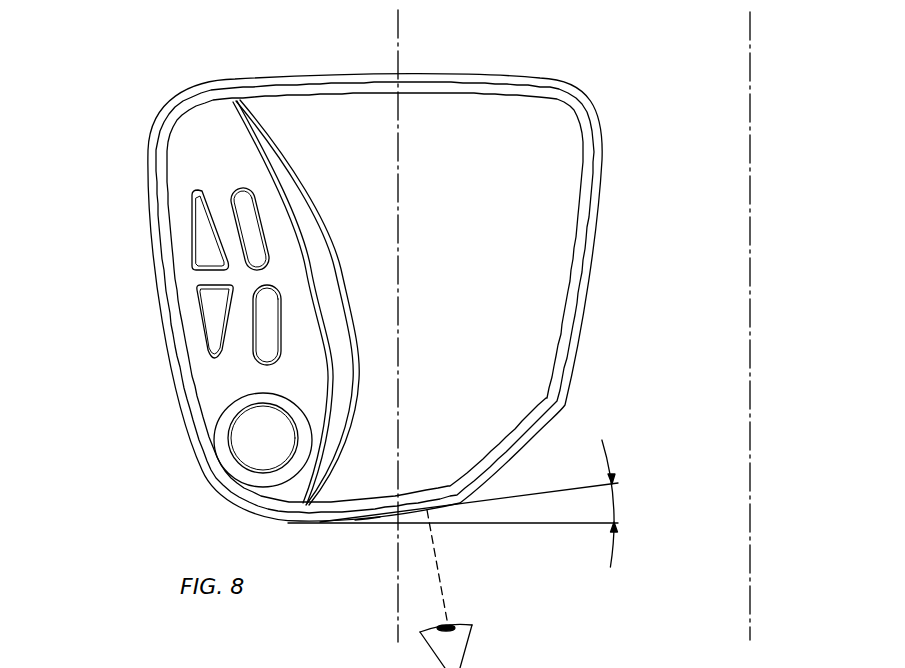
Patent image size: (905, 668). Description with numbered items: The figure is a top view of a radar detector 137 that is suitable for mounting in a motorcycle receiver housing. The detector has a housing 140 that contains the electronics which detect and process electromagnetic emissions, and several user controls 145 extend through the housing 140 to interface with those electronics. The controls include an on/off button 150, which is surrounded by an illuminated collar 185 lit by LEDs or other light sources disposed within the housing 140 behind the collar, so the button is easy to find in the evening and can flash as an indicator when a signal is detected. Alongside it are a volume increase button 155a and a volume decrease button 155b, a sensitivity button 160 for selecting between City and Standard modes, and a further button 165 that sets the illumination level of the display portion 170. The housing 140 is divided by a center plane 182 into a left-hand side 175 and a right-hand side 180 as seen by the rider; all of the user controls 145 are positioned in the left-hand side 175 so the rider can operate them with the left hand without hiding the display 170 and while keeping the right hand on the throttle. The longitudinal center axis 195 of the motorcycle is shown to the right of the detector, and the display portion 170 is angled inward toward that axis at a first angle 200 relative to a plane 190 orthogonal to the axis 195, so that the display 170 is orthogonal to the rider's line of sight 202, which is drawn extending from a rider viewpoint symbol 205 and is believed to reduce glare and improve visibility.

The radar detector 137 is at (433, 274).
The housing 140 is at (560, 245).
The user controls 145 is at (138, 381).
The on/off button 150 is at (247, 447).
The volume increase button 155a is at (218, 332).
The volume decrease button 155b is at (202, 223).
The sensitivity button 160 is at (273, 320).
The illumination control button 165 is at (247, 192).
The display portion 170 is at (362, 525).
The left-hand side 175 is at (307, 107).
The right-hand side 180 is at (563, 172).
The center plane 182 is at (398, 131).
The illuminated collar 185 is at (305, 430).
The plane orthogonal to the longitudinal axis 190 is at (483, 525).
The longitudinal center axis 195 is at (750, 442).
The first angle 200 is at (615, 503).
The line of sight 202 is at (437, 580).
The viewpoint indicator 205 is at (479, 646).